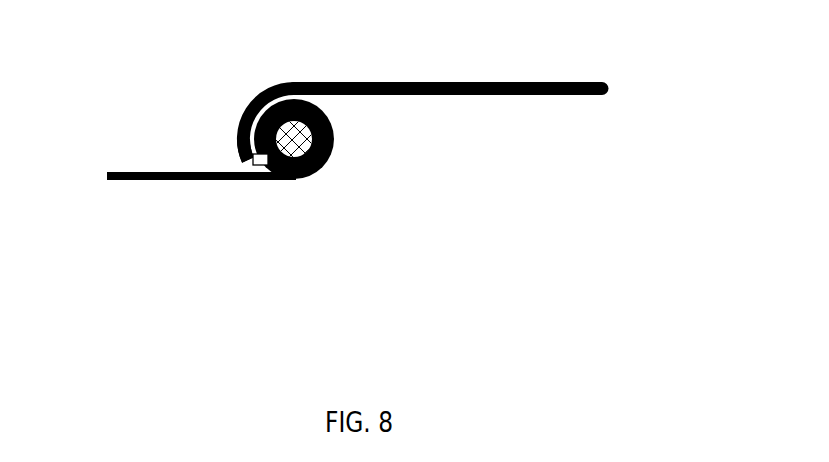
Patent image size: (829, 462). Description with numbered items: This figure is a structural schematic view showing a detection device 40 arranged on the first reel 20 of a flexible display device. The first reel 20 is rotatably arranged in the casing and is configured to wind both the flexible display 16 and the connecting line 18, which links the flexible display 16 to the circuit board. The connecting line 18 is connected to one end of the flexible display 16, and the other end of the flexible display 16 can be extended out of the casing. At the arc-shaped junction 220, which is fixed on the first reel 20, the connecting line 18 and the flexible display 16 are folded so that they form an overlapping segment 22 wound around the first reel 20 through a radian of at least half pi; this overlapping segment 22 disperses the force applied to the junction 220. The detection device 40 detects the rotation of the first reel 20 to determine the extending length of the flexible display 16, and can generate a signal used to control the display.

The flexible display 16 is at (610, 90).
The connecting line 18 is at (105, 178).
The first reel 20 is at (337, 138).
The overlapping segment 22 is at (248, 83).
The junction 220 is at (243, 145).
The detection device 40 is at (257, 165).